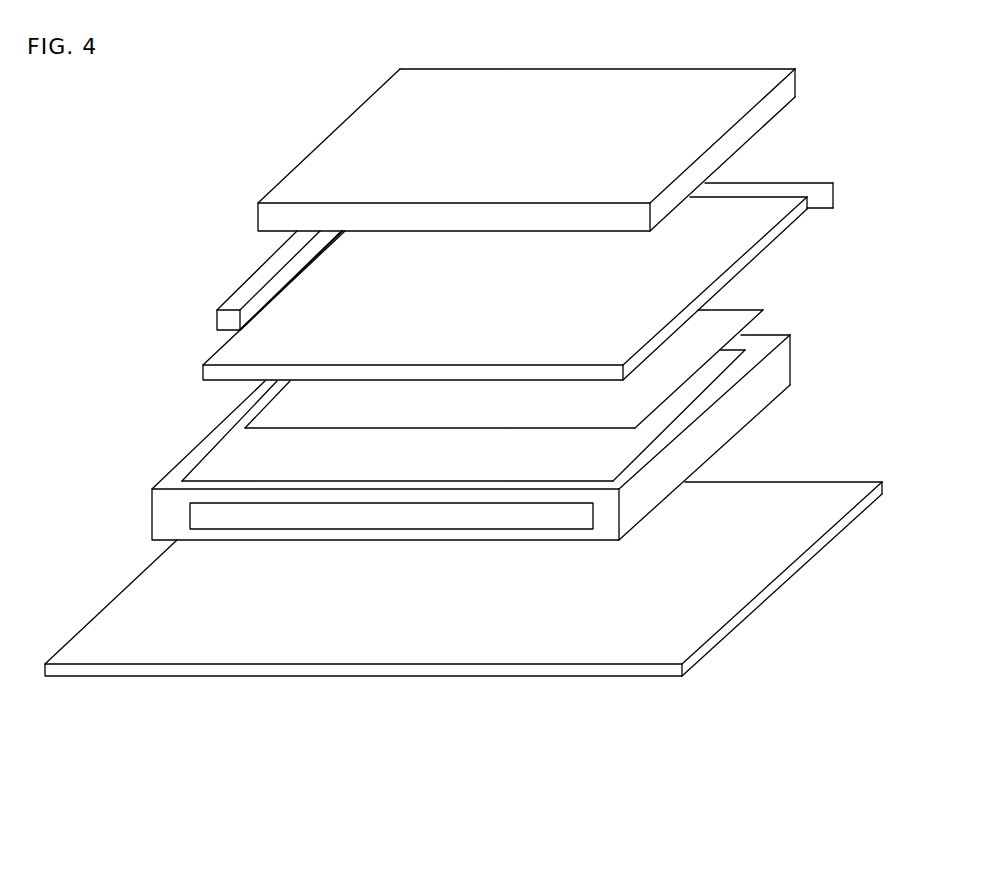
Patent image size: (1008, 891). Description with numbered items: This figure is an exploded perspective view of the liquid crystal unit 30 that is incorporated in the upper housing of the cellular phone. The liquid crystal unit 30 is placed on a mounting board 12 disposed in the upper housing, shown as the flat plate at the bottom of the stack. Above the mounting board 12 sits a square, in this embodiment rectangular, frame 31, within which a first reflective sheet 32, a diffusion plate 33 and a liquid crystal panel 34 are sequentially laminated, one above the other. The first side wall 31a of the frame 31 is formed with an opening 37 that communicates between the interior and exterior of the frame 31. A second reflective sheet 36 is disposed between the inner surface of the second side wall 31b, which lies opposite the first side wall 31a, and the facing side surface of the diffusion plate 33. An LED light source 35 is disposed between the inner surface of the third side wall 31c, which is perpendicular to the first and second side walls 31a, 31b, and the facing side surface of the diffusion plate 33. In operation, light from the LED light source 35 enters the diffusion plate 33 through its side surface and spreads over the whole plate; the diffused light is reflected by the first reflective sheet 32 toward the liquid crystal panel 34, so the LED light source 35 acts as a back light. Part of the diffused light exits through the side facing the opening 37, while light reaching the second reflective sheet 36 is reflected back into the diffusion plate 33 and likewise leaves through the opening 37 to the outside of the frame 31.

The mounting board 12 is at (728, 633).
The liquid crystal unit 30 is at (171, 284).
The frame 31 is at (475, 544).
The first side wall 31a is at (180, 521).
The second side wall 31b is at (763, 328).
The third side wall 31c is at (175, 462).
The first reflective sheet 32 is at (740, 310).
The diffusion plate 33 is at (770, 234).
The liquid crystal panel 34 is at (788, 92).
The LED light source 35 is at (218, 326).
The second reflective sheet 36 is at (829, 196).
The opening 37 is at (377, 510).